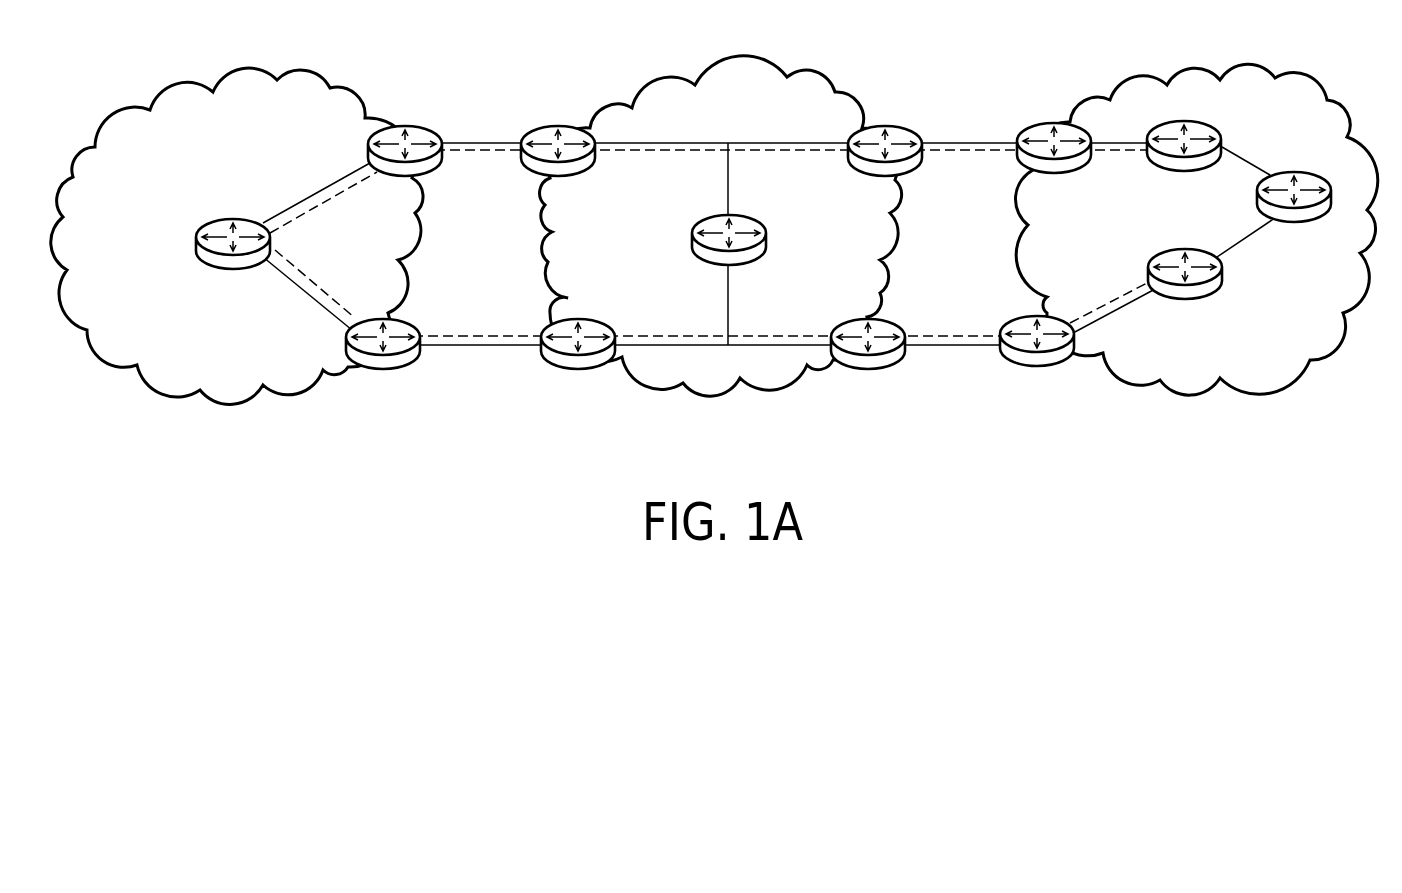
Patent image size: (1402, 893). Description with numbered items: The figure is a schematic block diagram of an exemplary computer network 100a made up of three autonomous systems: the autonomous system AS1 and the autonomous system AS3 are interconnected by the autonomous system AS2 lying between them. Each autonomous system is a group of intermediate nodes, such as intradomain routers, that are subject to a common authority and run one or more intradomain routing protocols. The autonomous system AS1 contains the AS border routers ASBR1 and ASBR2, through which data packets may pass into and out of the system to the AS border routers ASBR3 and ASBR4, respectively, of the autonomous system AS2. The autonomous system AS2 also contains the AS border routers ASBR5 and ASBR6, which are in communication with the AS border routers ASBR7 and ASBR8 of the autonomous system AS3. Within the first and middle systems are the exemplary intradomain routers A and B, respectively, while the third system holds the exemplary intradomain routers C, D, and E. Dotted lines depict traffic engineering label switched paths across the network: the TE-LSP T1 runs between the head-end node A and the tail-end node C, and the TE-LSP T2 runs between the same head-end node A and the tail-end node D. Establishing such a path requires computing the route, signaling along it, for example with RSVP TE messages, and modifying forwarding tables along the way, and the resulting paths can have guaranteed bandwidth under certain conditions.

The computer network 100a is at (253, 497).
The AS border router ASBR1 is at (415, 119).
The AS border router ASBR2 is at (373, 371).
The AS border router ASBR3 is at (557, 119).
The AS border router ASBR4 is at (571, 371).
The AS border router ASBR5 is at (895, 119).
The AS border router ASBR6 is at (875, 371).
The AS border router ASBR7 is at (1046, 116).
The AS border router ASBR8 is at (1040, 370).
The intradomain router A is at (210, 248).
The intradomain router B is at (749, 239).
The intradomain router C is at (1196, 128).
The intradomain router D is at (1166, 267).
The intradomain router E is at (1299, 219).
The TE-LSP T1 is at (345, 190).
The TE-LSP T2 is at (338, 307).
The autonomous system AS1 is at (237, 236).
The autonomous system AS2 is at (721, 226).
The autonomous system AS3 is at (1196, 229).